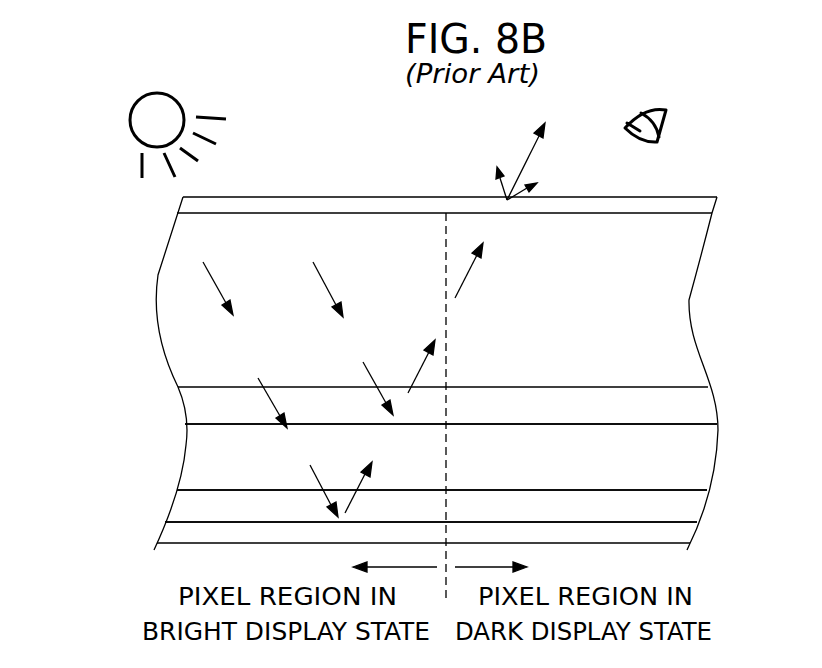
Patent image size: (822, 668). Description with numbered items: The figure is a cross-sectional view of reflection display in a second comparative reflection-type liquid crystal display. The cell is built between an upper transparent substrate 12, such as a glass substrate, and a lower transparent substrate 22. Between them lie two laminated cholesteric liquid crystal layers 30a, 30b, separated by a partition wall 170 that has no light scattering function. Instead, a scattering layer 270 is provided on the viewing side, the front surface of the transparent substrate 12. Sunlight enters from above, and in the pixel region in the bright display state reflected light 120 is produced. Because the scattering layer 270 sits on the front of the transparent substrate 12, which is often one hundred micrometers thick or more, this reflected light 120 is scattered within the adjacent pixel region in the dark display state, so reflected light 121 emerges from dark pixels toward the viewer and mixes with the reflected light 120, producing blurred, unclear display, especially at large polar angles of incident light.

The transparent substrate 12 is at (660, 293).
The scattering layer 270 is at (700, 205).
The liquid crystal layer 30a is at (697, 407).
The partition wall 170 is at (697, 454).
The liquid crystal layer 30b is at (675, 505).
The transparent substrate 22 is at (675, 533).
The reflected light 120 is at (463, 278).
The reflected light 121 is at (526, 160).